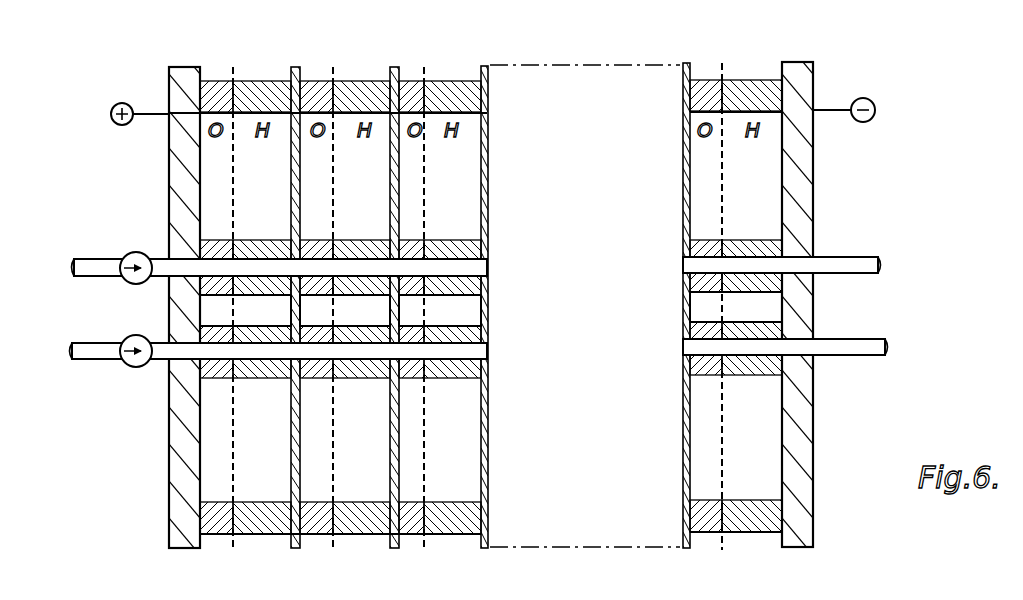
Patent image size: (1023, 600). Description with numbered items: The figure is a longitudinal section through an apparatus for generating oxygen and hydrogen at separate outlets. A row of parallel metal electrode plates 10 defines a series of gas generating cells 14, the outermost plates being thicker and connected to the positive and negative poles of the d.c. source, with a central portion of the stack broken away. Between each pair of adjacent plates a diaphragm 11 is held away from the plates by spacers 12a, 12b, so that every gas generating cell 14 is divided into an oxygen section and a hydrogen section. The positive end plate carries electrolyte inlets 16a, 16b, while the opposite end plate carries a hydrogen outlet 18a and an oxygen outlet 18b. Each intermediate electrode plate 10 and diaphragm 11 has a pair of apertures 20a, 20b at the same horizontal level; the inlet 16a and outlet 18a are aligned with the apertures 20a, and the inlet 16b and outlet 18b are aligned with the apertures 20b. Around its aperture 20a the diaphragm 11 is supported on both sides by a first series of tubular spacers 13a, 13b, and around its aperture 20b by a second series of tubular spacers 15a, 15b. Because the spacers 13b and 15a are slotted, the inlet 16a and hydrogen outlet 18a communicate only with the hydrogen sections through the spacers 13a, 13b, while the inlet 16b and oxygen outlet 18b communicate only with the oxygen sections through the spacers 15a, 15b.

The electrode plate 10 is at (185, 466).
The diaphragm 11 is at (235, 494).
The spacer 12a is at (218, 93).
The spacer 12b is at (268, 93).
The tubular spacer 13a is at (205, 379).
The tubular spacer 13b is at (752, 400).
The gas generating cell 14 is at (224, 540).
The tubular spacer 15a is at (206, 243).
The tubular spacer 15b is at (266, 243).
The electrolyte inlet 16a is at (160, 363).
The electrolyte inlet 16b is at (162, 280).
The hydrogen outlet 18a is at (808, 351).
The oxygen outlet 18b is at (810, 263).
The aperture 20a is at (255, 380).
The aperture 20b is at (338, 268).